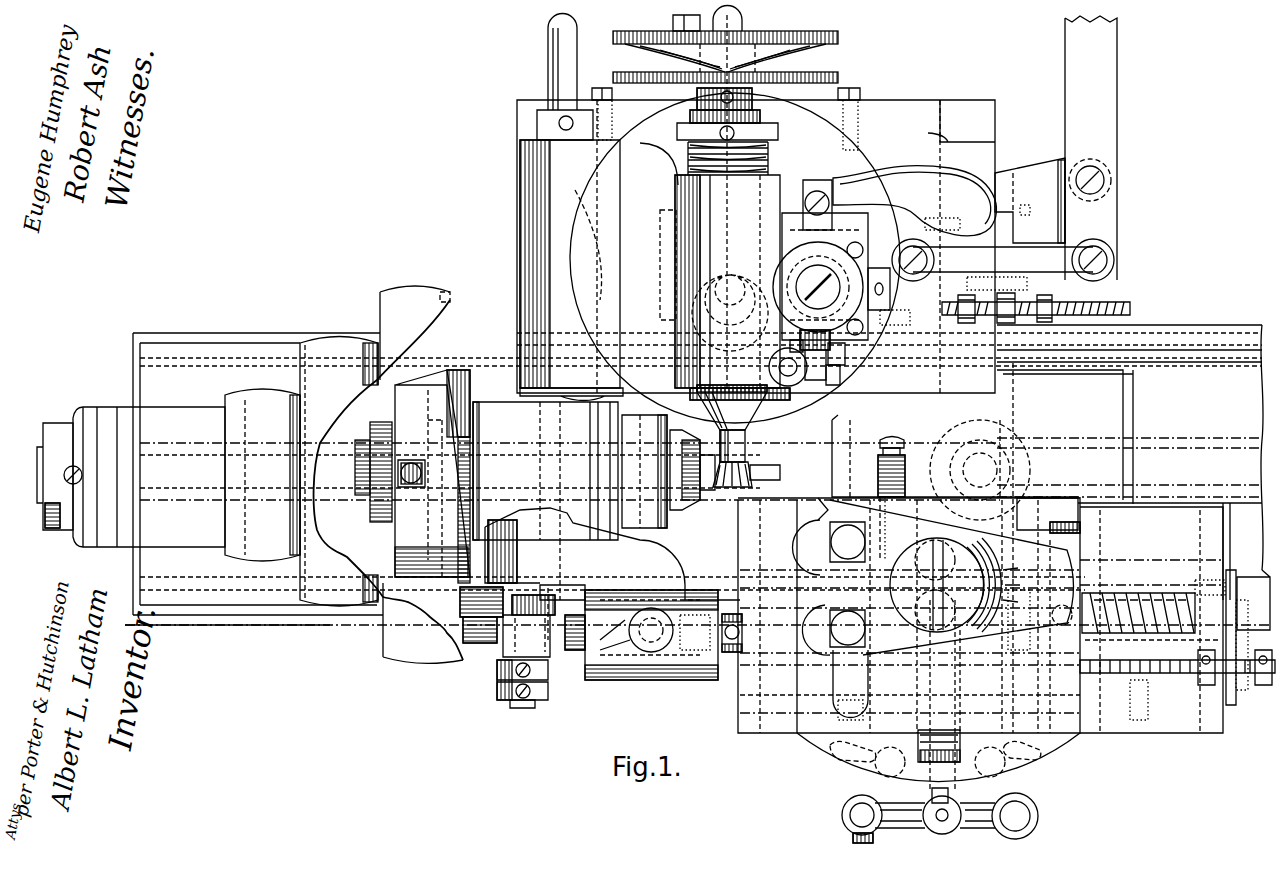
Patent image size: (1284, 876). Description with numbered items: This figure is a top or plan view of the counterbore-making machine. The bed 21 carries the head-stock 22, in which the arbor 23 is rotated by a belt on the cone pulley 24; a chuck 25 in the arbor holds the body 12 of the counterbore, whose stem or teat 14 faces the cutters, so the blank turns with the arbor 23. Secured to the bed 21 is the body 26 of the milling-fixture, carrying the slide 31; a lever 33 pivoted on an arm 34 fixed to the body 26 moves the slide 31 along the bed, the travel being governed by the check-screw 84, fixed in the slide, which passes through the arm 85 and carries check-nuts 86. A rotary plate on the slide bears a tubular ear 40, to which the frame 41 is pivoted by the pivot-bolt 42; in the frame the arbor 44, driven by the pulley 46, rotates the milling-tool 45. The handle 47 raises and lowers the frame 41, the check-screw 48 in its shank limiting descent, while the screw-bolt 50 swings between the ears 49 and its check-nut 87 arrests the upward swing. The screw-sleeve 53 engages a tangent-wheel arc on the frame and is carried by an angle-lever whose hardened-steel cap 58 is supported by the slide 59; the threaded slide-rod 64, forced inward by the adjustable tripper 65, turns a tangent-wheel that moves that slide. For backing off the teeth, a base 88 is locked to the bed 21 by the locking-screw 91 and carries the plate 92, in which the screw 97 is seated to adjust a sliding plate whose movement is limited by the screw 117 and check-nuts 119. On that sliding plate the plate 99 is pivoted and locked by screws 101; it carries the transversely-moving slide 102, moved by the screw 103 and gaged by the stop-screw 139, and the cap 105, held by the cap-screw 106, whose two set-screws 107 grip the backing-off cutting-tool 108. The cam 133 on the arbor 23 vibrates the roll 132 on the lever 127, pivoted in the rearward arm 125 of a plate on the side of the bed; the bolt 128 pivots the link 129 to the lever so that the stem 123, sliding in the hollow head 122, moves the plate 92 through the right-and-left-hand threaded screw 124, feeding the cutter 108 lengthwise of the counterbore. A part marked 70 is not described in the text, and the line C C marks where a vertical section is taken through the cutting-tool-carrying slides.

The body of the counterbore 12 is at (709, 472).
The stem, pin, or teat 14 is at (775, 474).
The bed 21 is at (697, 503).
The head-stock 22 is at (327, 474).
The arbor 23 is at (511, 471).
The cone pulley 24 is at (344, 474).
The chuck 25 is at (685, 470).
The body of the milling-fixture 26 is at (961, 121).
The plate or slide 31 is at (1000, 246).
The lever 33 is at (1091, 148).
The arm 34 is at (1030, 200).
The tubular ear 40 is at (745, 258).
The frame 41 is at (701, 287).
The pivot-bolt 42 is at (558, 76).
The arbor 44 is at (732, 407).
The milling-tool 45 is at (728, 493).
The pulley 46 is at (725, 57).
The knob or handle 47 is at (915, 201).
The adjustable check-screw 48 is at (817, 194).
The ears 49 is at (828, 350).
The screw-bolt 50 is at (775, 372).
The screw-sleeve 53 is at (820, 276).
The hardened-steel cap 58 is at (879, 280).
The slide 59 is at (887, 300).
The threaded slide-rod 64 is at (690, 98).
The adjustable tripper 65 is at (696, 91).
The pin 70 is at (450, 296).
The check-screw 84 is at (1048, 310).
The arm 85 is at (1005, 325).
The check-nuts 86 is at (968, 333).
The adjustable screw check-nut 87 is at (799, 358).
The base 88 is at (958, 487).
The locking-screw 91 is at (980, 470).
The plate 92 is at (990, 620).
The screw 97 is at (1125, 630).
The plate 99 is at (938, 695).
The screws 101 is at (935, 759).
The transversely-moving slide 102 is at (909, 615).
The screw 103 is at (948, 793).
The cap 105 is at (909, 576).
The cap-screw 106 is at (955, 585).
The set-screws 107 is at (847, 584).
The backing-off cutting-tool 108 is at (869, 584).
The screw 117 is at (1243, 637).
The check-nuts 119 is at (1203, 680).
The hollow head 122 is at (651, 644).
The stem 123 is at (577, 632).
The right-and-left-hand threaded screw 124 is at (725, 652).
The rearward arm 125 is at (612, 554).
The lever 127 is at (545, 578).
The bolt 128 is at (521, 703).
The link 129 is at (529, 626).
The roll or trundle 132 is at (488, 581).
The cam 133 is at (432, 476).
The screw 139 is at (897, 434).
The section line C C is at (1153, 606).